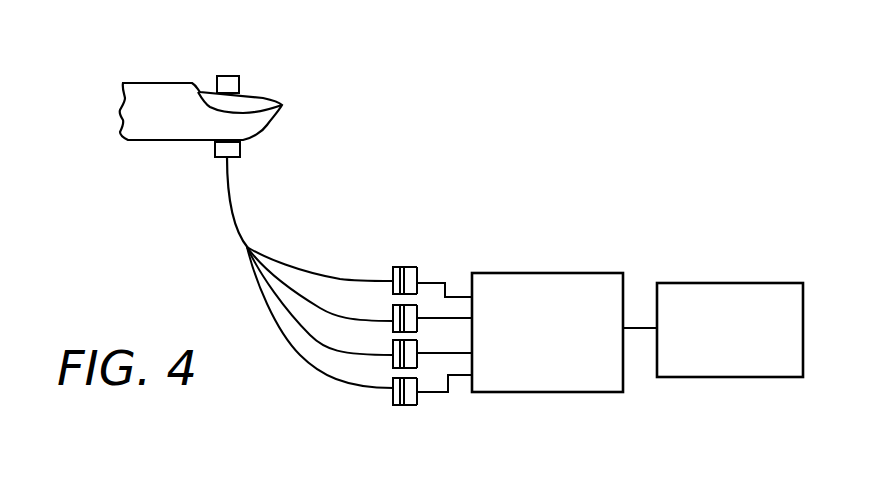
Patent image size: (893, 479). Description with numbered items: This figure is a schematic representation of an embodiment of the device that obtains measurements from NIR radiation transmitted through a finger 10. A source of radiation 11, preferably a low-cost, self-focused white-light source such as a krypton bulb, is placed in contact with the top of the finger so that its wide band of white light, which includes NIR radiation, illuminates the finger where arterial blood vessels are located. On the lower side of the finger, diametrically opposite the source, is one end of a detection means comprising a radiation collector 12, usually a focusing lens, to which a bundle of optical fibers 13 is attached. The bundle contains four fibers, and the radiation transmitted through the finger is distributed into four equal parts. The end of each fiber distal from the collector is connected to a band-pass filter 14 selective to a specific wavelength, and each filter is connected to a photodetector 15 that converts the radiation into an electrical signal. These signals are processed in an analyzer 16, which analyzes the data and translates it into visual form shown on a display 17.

The finger 10 is at (277, 120).
The source of radiation 11 is at (238, 82).
The radiation collector 12 is at (215, 157).
The bundle of optical fibers 13 is at (237, 227).
The band-pass filter 14 is at (400, 407).
The photodetector 15 is at (408, 407).
The analyzer 16 is at (531, 273).
The display 17 is at (718, 283).